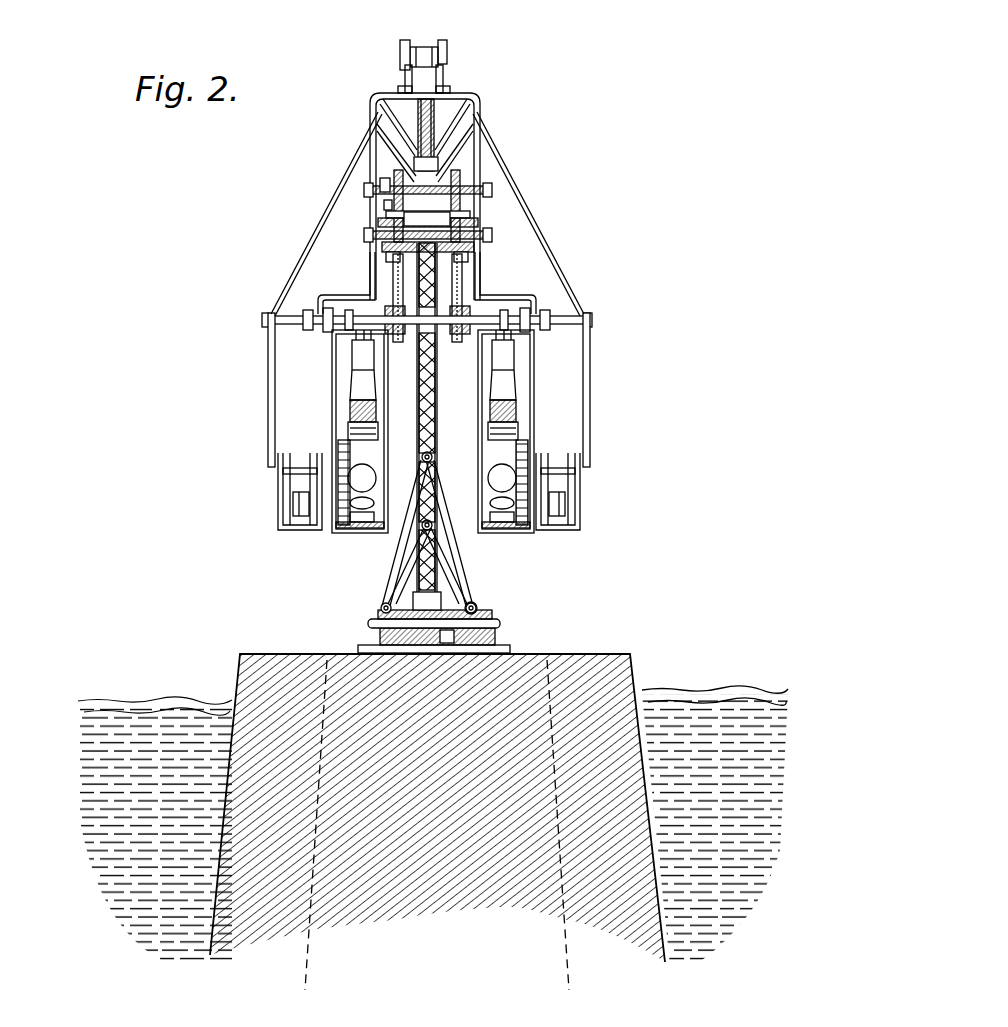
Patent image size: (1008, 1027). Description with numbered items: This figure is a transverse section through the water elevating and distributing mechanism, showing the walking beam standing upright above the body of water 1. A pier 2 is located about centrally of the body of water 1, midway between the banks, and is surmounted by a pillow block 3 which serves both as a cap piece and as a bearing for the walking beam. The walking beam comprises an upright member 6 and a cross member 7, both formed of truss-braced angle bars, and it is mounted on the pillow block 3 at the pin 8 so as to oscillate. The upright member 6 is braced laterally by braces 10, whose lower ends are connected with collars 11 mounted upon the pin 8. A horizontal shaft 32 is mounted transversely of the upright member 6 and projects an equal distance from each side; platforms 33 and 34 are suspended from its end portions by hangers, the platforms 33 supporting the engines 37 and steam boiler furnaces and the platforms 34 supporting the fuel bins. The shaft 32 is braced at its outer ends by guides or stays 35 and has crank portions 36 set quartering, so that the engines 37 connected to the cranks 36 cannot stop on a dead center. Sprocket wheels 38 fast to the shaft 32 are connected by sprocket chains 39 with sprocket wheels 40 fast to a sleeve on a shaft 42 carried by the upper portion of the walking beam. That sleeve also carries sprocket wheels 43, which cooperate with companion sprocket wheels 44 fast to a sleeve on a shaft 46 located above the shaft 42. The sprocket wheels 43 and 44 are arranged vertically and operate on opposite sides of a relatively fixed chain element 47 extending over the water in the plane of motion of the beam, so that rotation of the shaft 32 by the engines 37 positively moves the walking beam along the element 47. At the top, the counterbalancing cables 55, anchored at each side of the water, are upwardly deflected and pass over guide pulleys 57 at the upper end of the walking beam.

The body of water 1 is at (694, 694).
The pier 2 is at (268, 657).
The pillow block 3 is at (372, 637).
The upright member 6 is at (434, 452).
The cross member 7 is at (432, 156).
The pin 8 is at (500, 624).
The lateral braces 10 is at (392, 588).
The collars 11 is at (484, 610).
The horizontal shaft 32 is at (593, 319).
The platforms 33 is at (350, 532).
The platforms 34 is at (300, 532).
The guides or stays 35 is at (302, 258).
The crank portions 36 is at (362, 330).
The engines 37 is at (376, 408).
The sprocket wheels 38 is at (395, 335).
The sprocket chains 39 is at (392, 274).
The sprocket wheels 40 is at (384, 215).
The shaft 42 is at (488, 237).
The sprocket wheels 43 is at (470, 262).
The companion sprocket wheels 44 is at (482, 179).
The shaft 46 is at (372, 184).
The element 47 is at (378, 207).
The cables 55 is at (445, 43).
The guide pulleys 57 is at (404, 55).